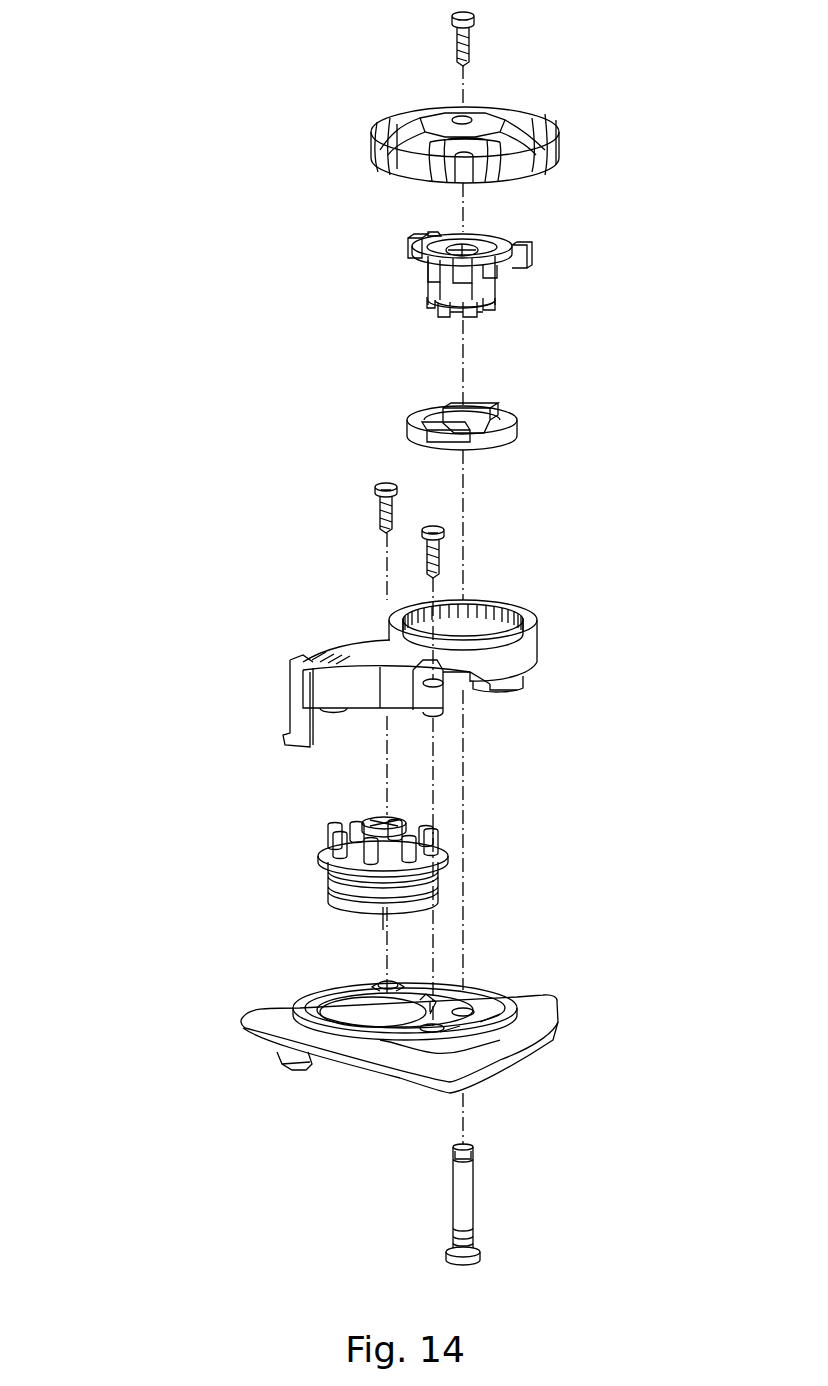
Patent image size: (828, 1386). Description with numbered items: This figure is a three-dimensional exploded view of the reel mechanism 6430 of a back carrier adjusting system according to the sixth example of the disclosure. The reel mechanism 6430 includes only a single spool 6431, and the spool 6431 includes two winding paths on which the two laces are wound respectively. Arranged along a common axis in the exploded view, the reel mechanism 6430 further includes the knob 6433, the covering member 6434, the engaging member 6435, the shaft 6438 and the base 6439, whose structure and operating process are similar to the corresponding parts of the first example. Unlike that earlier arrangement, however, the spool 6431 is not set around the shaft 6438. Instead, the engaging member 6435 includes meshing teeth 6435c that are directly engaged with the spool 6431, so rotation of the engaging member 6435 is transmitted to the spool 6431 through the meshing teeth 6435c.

The reel mechanism 6430 is at (115, 27).
The knob 6433 is at (377, 153).
The engaging member 6435 is at (415, 246).
The meshing teeth 6435c is at (432, 305).
The covering member 6434 is at (540, 634).
The spool 6431 is at (330, 878).
The base 6439 is at (245, 1025).
The shaft 6438 is at (465, 1196).